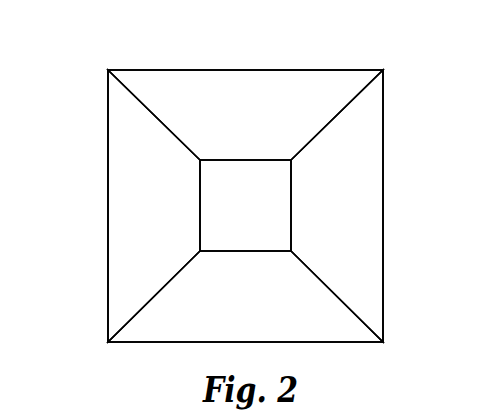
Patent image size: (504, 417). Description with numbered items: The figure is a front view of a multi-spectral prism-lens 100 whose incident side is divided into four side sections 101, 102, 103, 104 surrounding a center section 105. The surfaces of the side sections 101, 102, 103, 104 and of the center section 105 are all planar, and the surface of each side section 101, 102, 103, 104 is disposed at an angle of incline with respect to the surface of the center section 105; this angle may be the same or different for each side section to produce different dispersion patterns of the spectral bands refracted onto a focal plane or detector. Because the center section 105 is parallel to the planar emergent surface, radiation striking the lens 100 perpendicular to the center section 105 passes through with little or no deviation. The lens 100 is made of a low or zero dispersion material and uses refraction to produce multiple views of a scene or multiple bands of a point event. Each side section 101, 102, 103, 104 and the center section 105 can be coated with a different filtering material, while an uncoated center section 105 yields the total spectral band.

The multi-spectral prism-lens 100 is at (102, 47).
The side section 101 is at (145, 200).
The side section 102 is at (247, 117).
The side section 103 is at (350, 182).
The side section 104 is at (312, 322).
The center section 105 is at (218, 228).